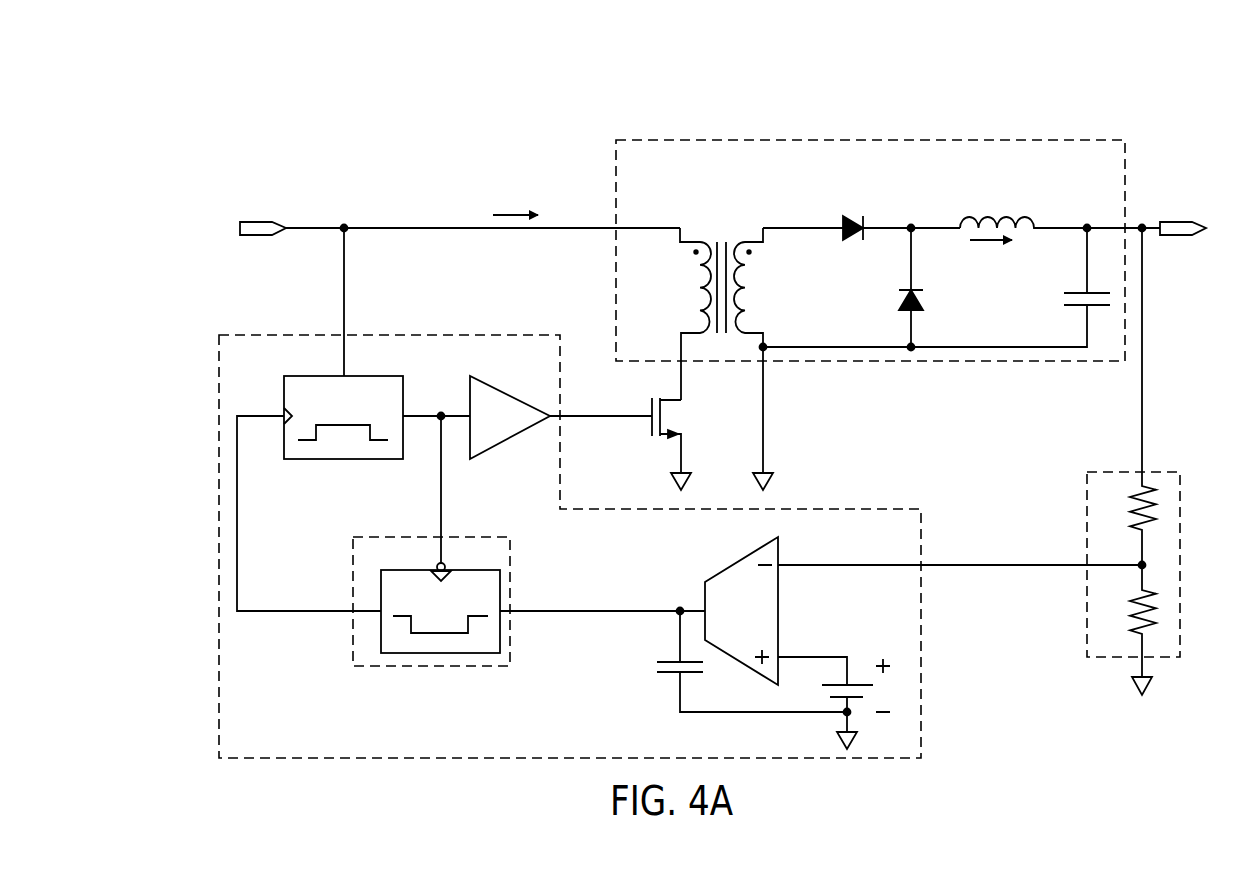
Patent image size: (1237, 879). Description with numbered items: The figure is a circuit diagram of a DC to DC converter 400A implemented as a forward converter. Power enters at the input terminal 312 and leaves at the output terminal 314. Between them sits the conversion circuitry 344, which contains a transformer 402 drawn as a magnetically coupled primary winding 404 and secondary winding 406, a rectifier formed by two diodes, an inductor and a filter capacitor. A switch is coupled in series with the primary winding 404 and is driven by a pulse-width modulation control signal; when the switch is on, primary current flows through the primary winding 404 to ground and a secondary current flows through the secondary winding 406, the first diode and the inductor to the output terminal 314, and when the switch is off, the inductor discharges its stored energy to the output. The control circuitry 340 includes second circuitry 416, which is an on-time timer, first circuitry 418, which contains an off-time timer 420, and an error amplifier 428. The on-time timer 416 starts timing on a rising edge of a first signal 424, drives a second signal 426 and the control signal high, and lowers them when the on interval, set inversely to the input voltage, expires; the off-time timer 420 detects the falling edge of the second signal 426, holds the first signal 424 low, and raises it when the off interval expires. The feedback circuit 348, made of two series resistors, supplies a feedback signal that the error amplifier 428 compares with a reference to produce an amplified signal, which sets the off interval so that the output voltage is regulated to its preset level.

The DC to DC converter 400A is at (196, 117).
The input terminal 312 is at (247, 237).
The output terminal 314 is at (1180, 237).
The control circuitry 340 is at (219, 378).
The conversion circuitry 344 is at (912, 140).
The feedback circuit 348 is at (1088, 520).
The transformer 402 is at (714, 196).
The primary winding 404 is at (700, 240).
The secondary winding 406 is at (745, 240).
The second circuitry 416 is at (330, 376).
The first circuitry 418 is at (353, 575).
The TOFF timer 420 is at (431, 568).
The first signal 424 is at (298, 612).
The second signal 426 is at (440, 416).
The error amplifier 428 is at (725, 570).